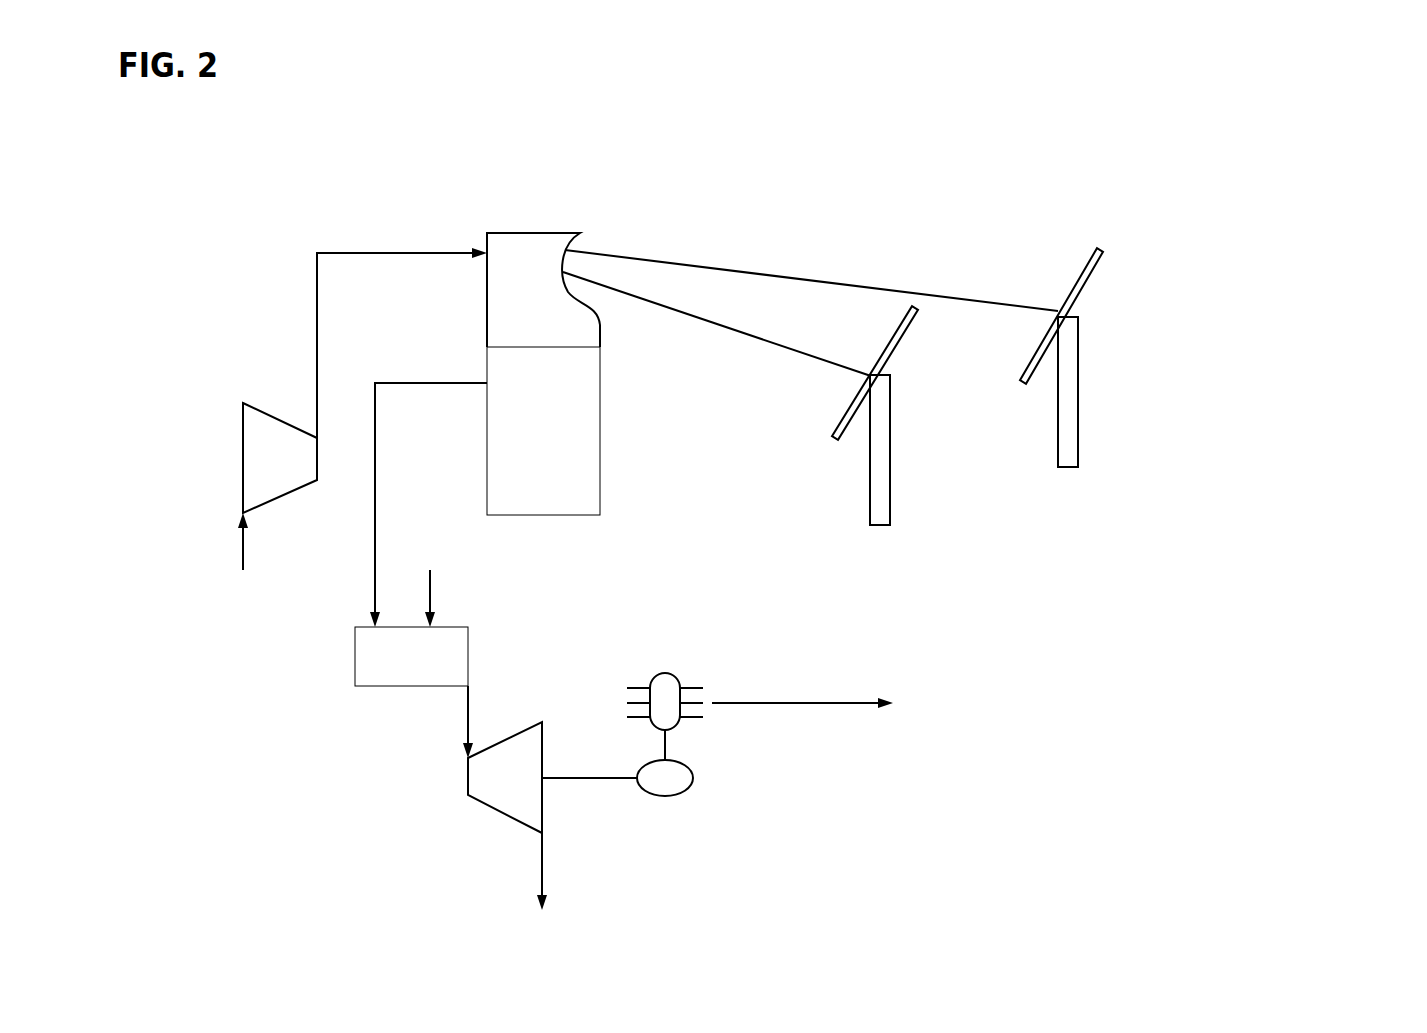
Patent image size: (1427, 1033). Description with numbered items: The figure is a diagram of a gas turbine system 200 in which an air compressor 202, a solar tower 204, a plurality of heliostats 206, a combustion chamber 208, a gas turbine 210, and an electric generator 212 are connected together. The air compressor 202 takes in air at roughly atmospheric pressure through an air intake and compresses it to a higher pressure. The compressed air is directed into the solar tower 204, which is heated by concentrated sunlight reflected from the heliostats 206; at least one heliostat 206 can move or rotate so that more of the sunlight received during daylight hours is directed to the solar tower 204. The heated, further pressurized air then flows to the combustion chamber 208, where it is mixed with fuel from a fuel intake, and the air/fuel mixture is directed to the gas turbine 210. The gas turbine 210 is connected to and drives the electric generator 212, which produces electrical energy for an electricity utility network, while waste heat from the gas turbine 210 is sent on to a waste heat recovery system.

The gas turbine system 200 is at (1285, 190).
The air compressor 202 is at (242, 438).
The solar tower 204 is at (543, 232).
The plurality of heliostats 206 is at (982, 426).
The combustion chamber 208 is at (355, 657).
The gas turbine 210 is at (468, 780).
The electric generator 212 is at (696, 778).